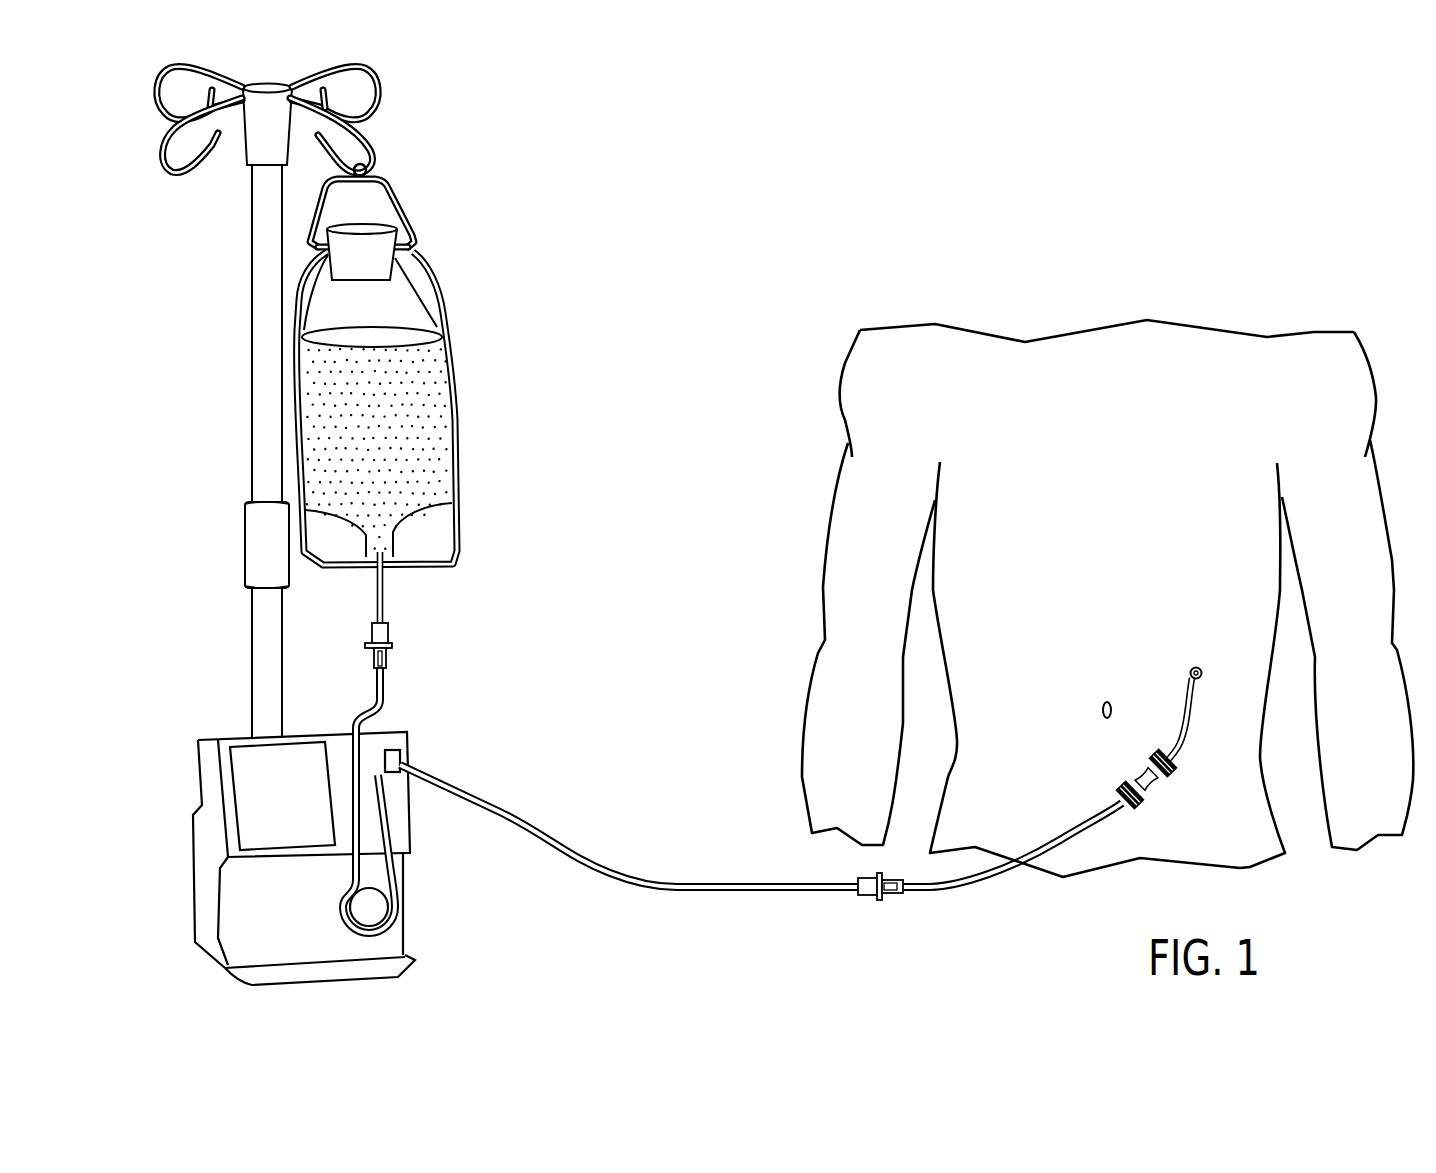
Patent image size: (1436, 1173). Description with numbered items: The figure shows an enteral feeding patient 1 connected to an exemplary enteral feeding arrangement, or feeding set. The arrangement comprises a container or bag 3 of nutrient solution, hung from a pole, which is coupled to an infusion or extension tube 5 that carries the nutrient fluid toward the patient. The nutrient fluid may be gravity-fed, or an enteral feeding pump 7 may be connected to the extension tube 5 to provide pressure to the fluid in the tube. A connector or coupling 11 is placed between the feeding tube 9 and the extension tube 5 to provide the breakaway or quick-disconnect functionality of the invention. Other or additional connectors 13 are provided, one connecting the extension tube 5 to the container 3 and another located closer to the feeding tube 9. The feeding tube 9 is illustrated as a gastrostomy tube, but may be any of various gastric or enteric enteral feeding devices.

The enteral feeding patient 1 is at (1165, 390).
The container 3 is at (423, 422).
The extension tube 5 is at (498, 812).
The enteral feeding pump 7 is at (410, 940).
The feeding tube 9 is at (1178, 702).
The connector 11 is at (1125, 790).
The connector 13 is at (393, 647).